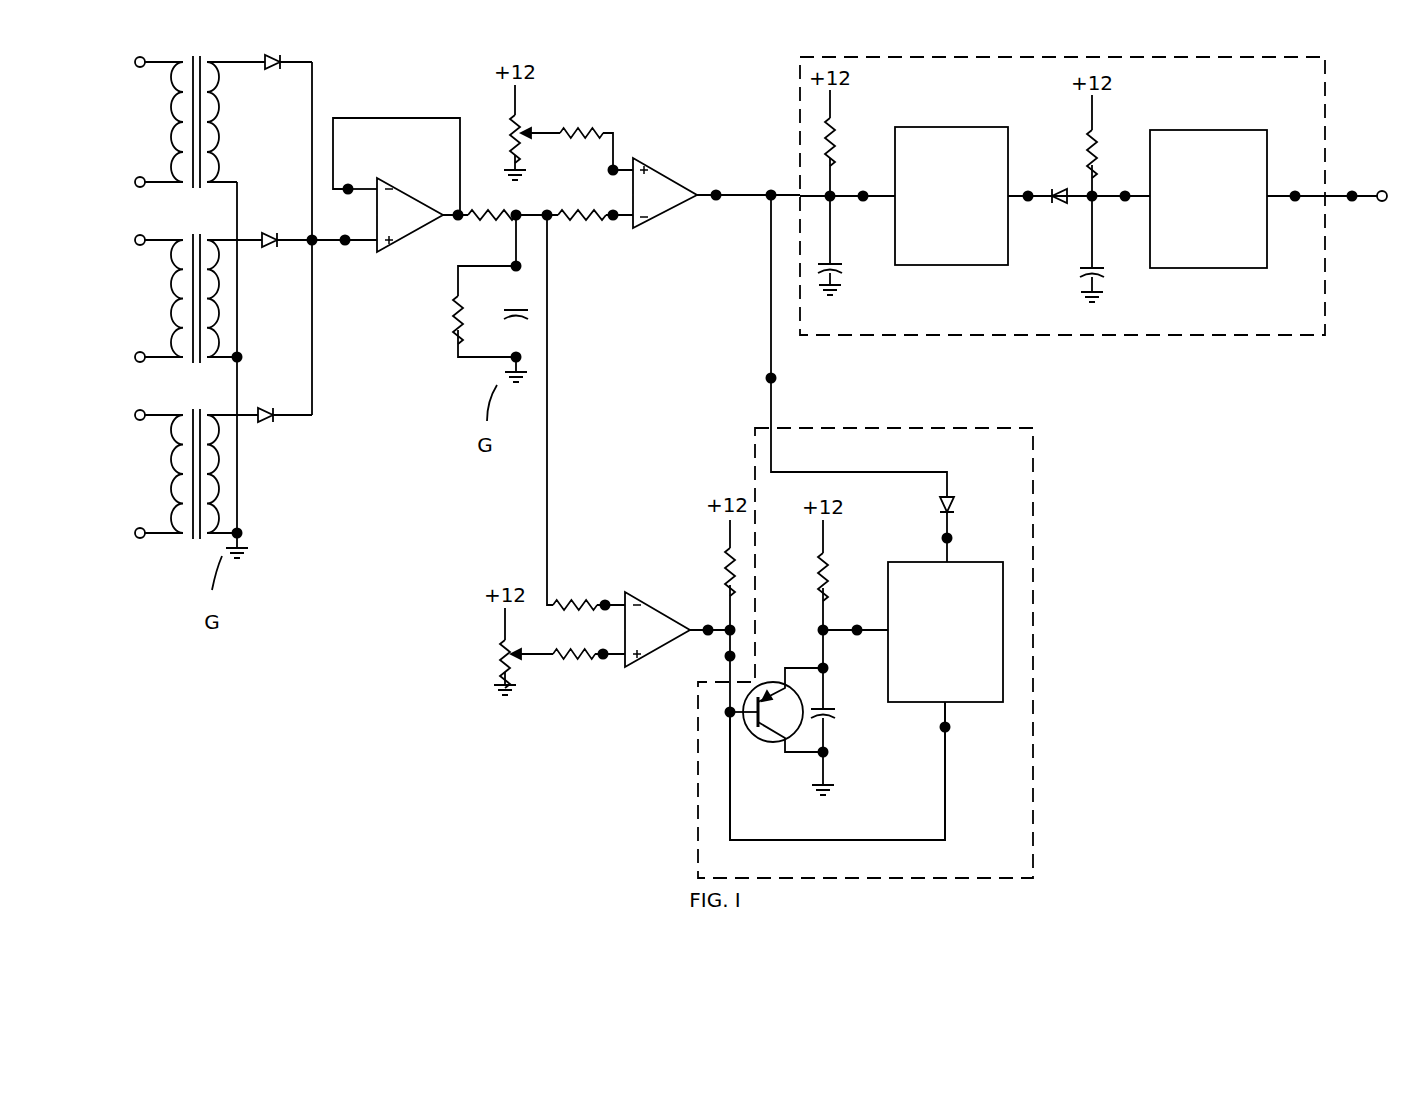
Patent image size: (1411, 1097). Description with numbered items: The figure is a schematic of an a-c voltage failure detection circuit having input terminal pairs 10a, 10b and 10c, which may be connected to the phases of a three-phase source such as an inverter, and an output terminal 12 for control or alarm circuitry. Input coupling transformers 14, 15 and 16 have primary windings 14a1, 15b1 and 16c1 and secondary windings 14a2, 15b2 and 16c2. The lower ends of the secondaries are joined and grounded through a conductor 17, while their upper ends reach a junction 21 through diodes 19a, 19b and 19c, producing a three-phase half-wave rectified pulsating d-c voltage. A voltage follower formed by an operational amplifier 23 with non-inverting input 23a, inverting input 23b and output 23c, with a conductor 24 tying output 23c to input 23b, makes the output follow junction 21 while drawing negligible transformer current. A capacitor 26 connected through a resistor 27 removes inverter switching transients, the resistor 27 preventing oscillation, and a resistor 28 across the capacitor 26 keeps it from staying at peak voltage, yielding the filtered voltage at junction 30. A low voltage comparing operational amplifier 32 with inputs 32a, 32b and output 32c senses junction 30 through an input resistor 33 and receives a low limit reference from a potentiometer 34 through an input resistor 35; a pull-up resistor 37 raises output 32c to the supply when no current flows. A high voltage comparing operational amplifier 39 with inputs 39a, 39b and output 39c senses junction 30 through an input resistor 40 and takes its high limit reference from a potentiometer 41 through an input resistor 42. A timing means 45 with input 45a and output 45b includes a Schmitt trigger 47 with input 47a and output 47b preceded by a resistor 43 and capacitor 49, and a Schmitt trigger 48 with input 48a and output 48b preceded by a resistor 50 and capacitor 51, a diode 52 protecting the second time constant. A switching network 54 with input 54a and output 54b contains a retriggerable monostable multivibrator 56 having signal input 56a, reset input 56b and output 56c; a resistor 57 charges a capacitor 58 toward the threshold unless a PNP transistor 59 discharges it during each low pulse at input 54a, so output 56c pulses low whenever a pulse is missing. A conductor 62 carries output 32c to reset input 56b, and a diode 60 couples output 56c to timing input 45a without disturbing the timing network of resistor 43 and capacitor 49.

The input terminal pair 10a is at (137, 174).
The input terminal pair 10b is at (137, 342).
The input terminal pair 10c is at (137, 516).
The output terminal 12 is at (1384, 202).
The input coupling transformer 14 is at (190, 56).
The primary winding 14a1 is at (177, 130).
The secondary winding 14a2 is at (220, 126).
The input coupling transformer 15 is at (188, 232).
The primary winding 15b1 is at (176, 298).
The secondary winding 15b2 is at (218, 298).
The input coupling transformer 16 is at (188, 405).
The primary winding 16c1 is at (176, 472).
The secondary winding 16c2 is at (224, 475).
The conductor 17 is at (244, 544).
The diode 19a is at (276, 58).
The diode 19b is at (272, 232).
The diode 19c is at (273, 410).
The junction 21 is at (318, 246).
The operational amplifier 23 is at (410, 215).
The non-inverting input 23a is at (348, 244).
The inverting input 23b is at (348, 184).
The output 23c is at (452, 222).
The conductor 24 is at (410, 118).
The capacitor 26 is at (502, 310).
The resistor 27 is at (492, 224).
The resistor 28 is at (454, 324).
The junction 30 is at (518, 212).
The operational amplifier 32 is at (657, 629).
The non-inverting input 32a is at (606, 662).
The inverting input 32b is at (606, 600).
The output 32c is at (706, 624).
The input resistor 33 is at (561, 601).
The potentiometer 34 is at (502, 652).
The input resistor 35 is at (573, 662).
The pull-up resistor 37 is at (730, 574).
The operational amplifier 39 is at (665, 193).
The non-inverting input 39a is at (616, 162).
The inverting input 39b is at (614, 224).
The output 39c is at (714, 202).
The input resistor 40 is at (578, 220).
The potentiometer 41 is at (516, 132).
The input resistor 42 is at (561, 130).
The resistor 43 is at (836, 140).
The timing means 45 is at (1094, 338).
The input 45a is at (768, 204).
The output 45b is at (1352, 192).
The Schmitt trigger 47 is at (942, 266).
The input 47a is at (860, 188).
The output 47b is at (1028, 200).
The Schmitt trigger 48 is at (1214, 270).
The input 48a is at (1124, 202).
The output 48b is at (1295, 192).
The capacitor 49 is at (842, 274).
The resistor 50 is at (1102, 148).
The capacitor 51 is at (1084, 275).
The diode 52 is at (1058, 186).
The switching network 54 is at (1034, 630).
The input 54a is at (730, 656).
The output 54b is at (774, 378).
The retriggerable monostable multivibrator 56 is at (984, 702).
The signal input 56a is at (858, 628).
The reset input 56b is at (942, 732).
The output 56c is at (952, 538).
The resistor 57 is at (824, 573).
The capacitor 58 is at (830, 704).
The PNP transistor 59 is at (770, 736).
The diode 60 is at (956, 506).
The conductor 62 is at (875, 842).